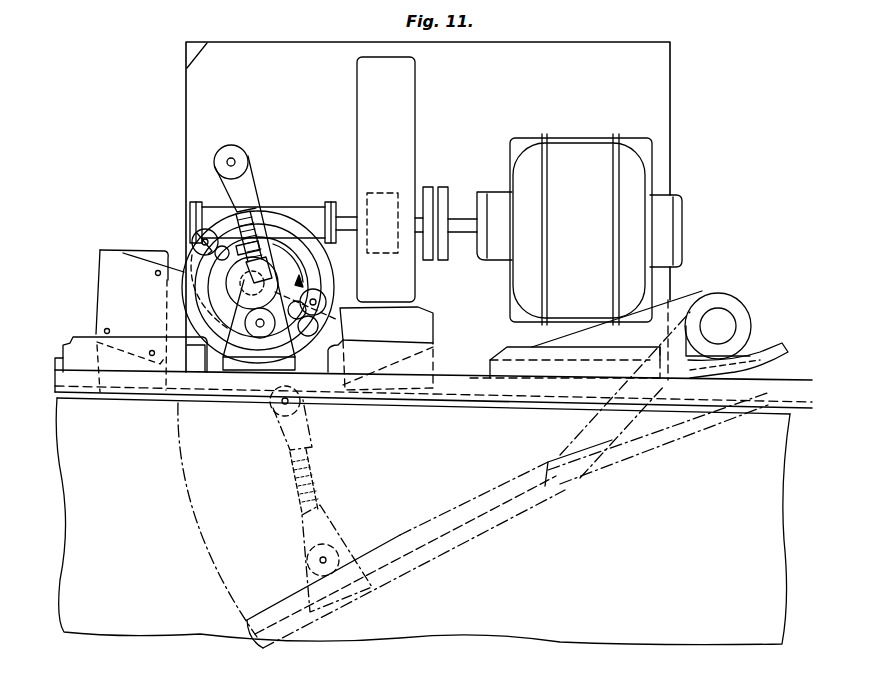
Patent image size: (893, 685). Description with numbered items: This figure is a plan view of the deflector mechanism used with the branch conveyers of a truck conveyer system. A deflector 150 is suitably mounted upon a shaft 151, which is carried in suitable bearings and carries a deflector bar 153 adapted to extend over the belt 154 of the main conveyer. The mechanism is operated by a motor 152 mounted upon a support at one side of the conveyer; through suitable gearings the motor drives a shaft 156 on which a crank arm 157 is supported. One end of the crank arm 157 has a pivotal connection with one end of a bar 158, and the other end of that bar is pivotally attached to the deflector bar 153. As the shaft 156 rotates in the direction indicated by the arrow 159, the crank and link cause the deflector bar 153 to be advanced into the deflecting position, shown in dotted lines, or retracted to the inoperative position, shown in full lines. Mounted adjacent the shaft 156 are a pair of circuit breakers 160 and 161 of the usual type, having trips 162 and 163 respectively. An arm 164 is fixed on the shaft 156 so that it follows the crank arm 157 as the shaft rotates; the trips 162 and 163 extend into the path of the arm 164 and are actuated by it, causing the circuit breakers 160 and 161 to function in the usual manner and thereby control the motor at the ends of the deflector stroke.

The deflector 150 is at (76, 331).
The shaft 151 is at (722, 323).
The motor 152 is at (576, 256).
The deflector bar 153 is at (450, 355).
The belt 154 is at (423, 521).
The shaft 156 is at (277, 245).
The crank arm 157 is at (262, 206).
The bar 158 is at (226, 182).
The arrow 159 is at (300, 247).
The circuit breaker 160 is at (140, 321).
The circuit breaker 161 is at (380, 348).
The trip 162 is at (193, 240).
The trip 163 is at (316, 298).
The arm 164 is at (218, 282).